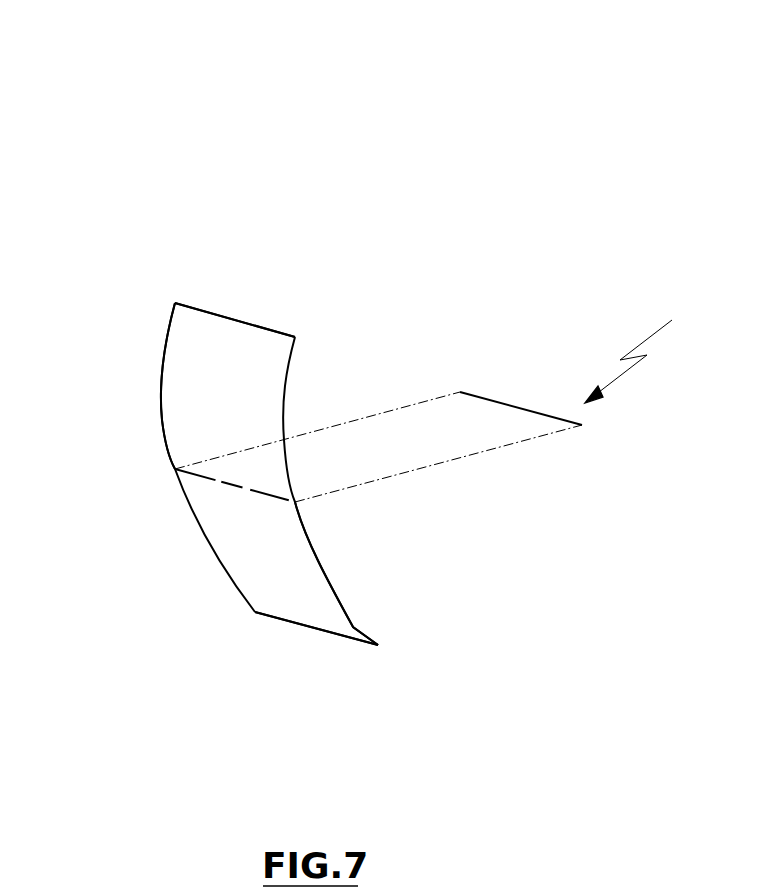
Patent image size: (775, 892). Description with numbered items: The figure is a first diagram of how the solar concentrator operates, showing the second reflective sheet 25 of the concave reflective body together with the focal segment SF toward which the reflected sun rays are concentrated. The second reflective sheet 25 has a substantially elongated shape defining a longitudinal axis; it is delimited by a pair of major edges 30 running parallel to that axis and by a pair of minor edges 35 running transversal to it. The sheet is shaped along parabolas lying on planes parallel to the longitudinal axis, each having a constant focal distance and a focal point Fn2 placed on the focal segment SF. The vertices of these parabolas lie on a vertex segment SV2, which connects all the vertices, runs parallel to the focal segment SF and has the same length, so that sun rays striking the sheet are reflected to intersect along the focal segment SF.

The second reflective sheet 25 is at (198, 355).
The major edges 30 is at (160, 360).
The minor edges 35 is at (215, 312).
The vertex segment SV2 is at (200, 478).
The focal segment SF is at (512, 404).
The focal point Fn2 is at (647, 344).